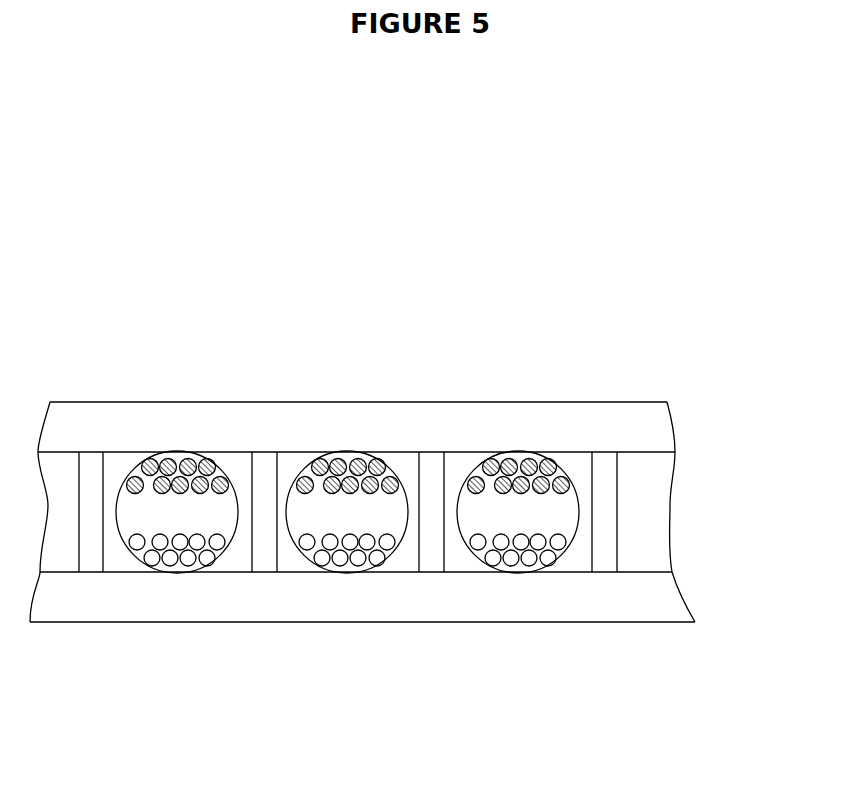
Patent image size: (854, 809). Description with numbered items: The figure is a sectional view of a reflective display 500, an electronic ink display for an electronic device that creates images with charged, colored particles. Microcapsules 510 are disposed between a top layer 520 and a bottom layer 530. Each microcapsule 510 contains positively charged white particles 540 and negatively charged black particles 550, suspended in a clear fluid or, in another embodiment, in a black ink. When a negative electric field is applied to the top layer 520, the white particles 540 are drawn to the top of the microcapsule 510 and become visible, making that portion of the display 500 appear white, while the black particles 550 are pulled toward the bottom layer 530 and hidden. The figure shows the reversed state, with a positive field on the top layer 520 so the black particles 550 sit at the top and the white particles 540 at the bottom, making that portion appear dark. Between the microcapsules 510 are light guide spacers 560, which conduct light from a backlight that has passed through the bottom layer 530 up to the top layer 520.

The reflective display 500 is at (166, 39).
The microcapsules 510 is at (505, 517).
The top layer 520 is at (633, 427).
The bottom layer 530 is at (650, 602).
The white particles 540 is at (528, 562).
The black particles 550 is at (528, 462).
The light guide spacer 560 is at (600, 548).